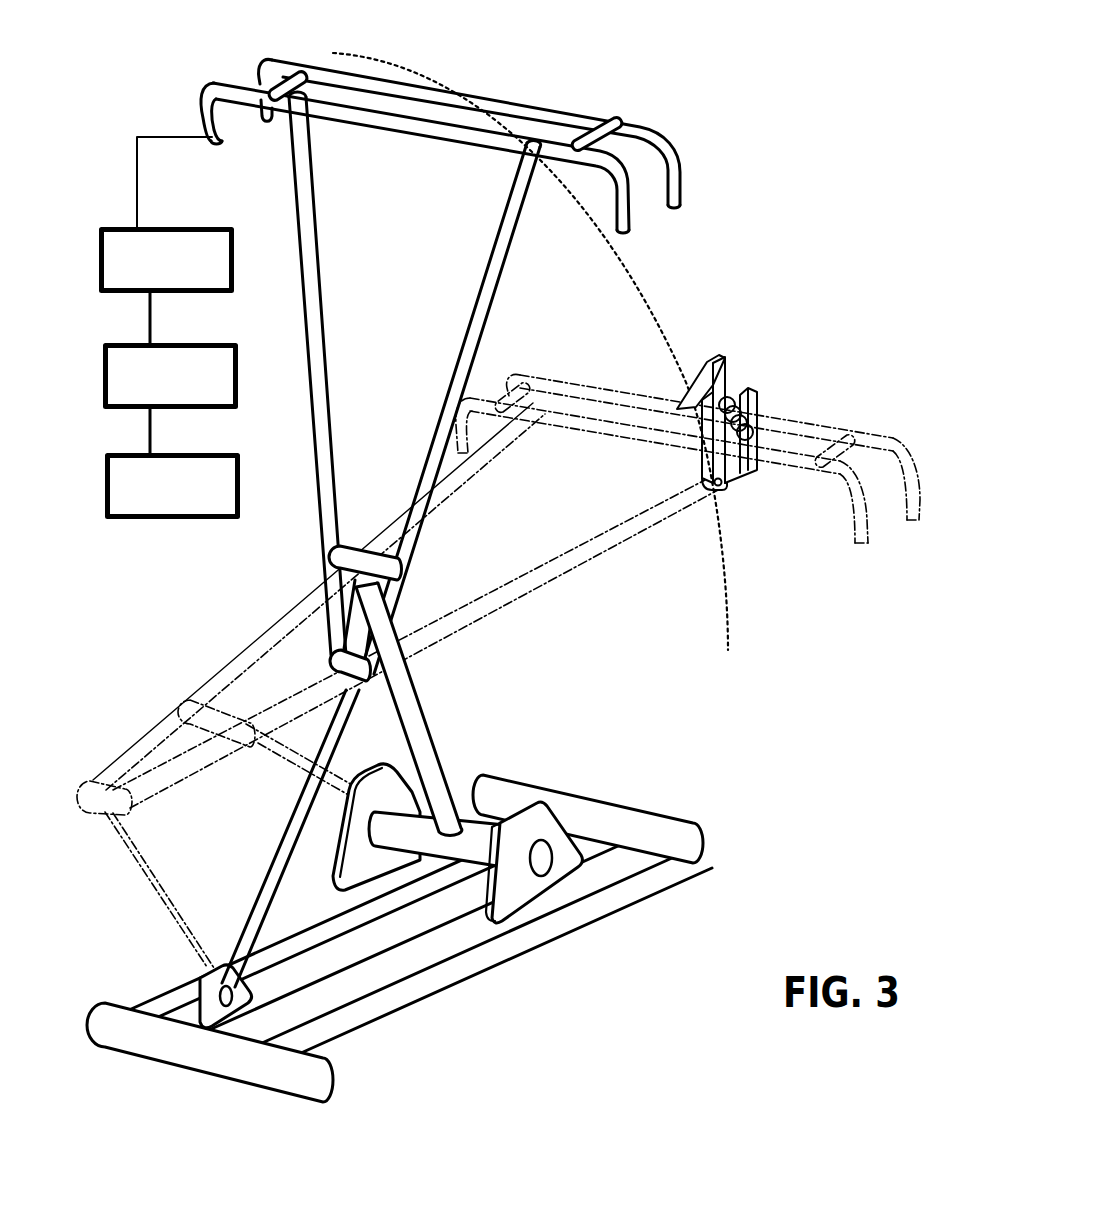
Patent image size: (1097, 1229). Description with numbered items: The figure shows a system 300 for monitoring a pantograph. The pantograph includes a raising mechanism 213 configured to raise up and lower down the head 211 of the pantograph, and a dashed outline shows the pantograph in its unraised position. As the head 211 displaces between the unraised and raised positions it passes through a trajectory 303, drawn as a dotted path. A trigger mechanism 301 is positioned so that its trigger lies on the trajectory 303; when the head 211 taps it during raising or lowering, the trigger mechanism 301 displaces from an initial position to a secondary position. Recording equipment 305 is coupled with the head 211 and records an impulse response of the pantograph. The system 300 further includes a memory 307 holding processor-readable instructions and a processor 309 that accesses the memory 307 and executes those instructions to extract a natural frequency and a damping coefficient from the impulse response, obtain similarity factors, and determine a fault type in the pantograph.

The system for monitoring a pantograph 300 is at (501, 556).
The head 211 is at (577, 112).
The trajectory 303 is at (650, 293).
The trigger mechanism 301 is at (744, 365).
The raising mechanism 213 is at (432, 569).
The recording equipment 305 is at (167, 260).
The memory 307 is at (171, 376).
The processor 309 is at (173, 486).